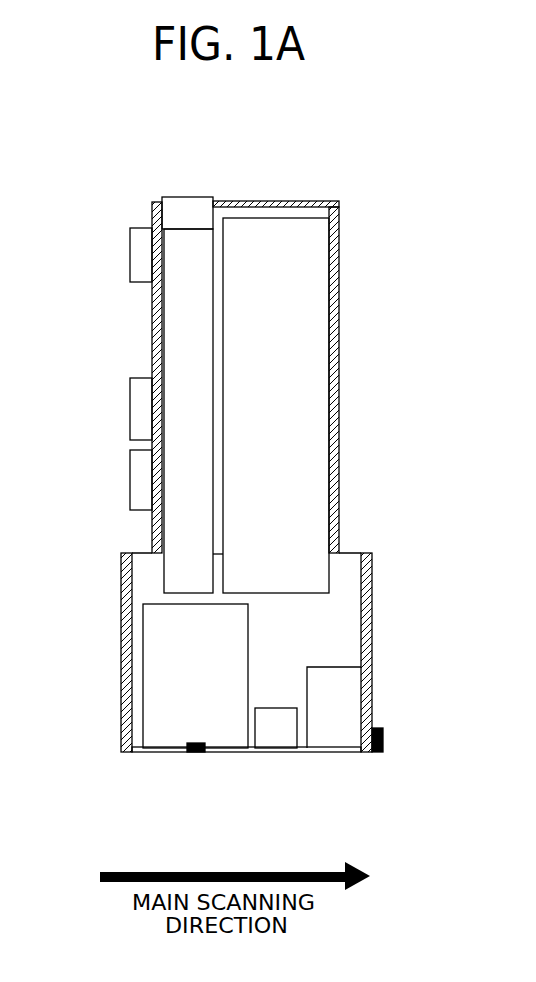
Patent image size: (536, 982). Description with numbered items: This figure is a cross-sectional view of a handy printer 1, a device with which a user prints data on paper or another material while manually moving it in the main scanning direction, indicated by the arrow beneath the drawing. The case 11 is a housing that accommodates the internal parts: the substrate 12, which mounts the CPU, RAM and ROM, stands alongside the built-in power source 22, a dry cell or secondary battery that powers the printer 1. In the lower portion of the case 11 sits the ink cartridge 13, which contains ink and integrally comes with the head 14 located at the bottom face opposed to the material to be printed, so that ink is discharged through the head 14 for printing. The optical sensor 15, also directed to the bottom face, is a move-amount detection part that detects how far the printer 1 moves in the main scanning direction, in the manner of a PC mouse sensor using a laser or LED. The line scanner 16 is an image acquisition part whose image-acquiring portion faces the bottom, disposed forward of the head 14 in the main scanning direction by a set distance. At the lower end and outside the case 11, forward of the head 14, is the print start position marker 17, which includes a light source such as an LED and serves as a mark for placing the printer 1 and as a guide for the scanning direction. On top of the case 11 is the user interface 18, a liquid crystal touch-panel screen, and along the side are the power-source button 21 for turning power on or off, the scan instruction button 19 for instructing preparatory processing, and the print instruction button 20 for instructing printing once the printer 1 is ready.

The printer 1 is at (414, 150).
The case 11 is at (337, 283).
The substrate 12 is at (170, 323).
The ink cartridge 13 is at (158, 738).
The head 14 is at (190, 752).
The optical sensor 15 is at (273, 740).
The line scanner 16 is at (353, 687).
The print start position marker 17 is at (385, 737).
The user interface 18 is at (193, 207).
The scan instruction button 19 is at (140, 402).
The print instruction button 20 is at (142, 472).
The power-source button 21 is at (138, 255).
The built-in power source 22 is at (317, 383).